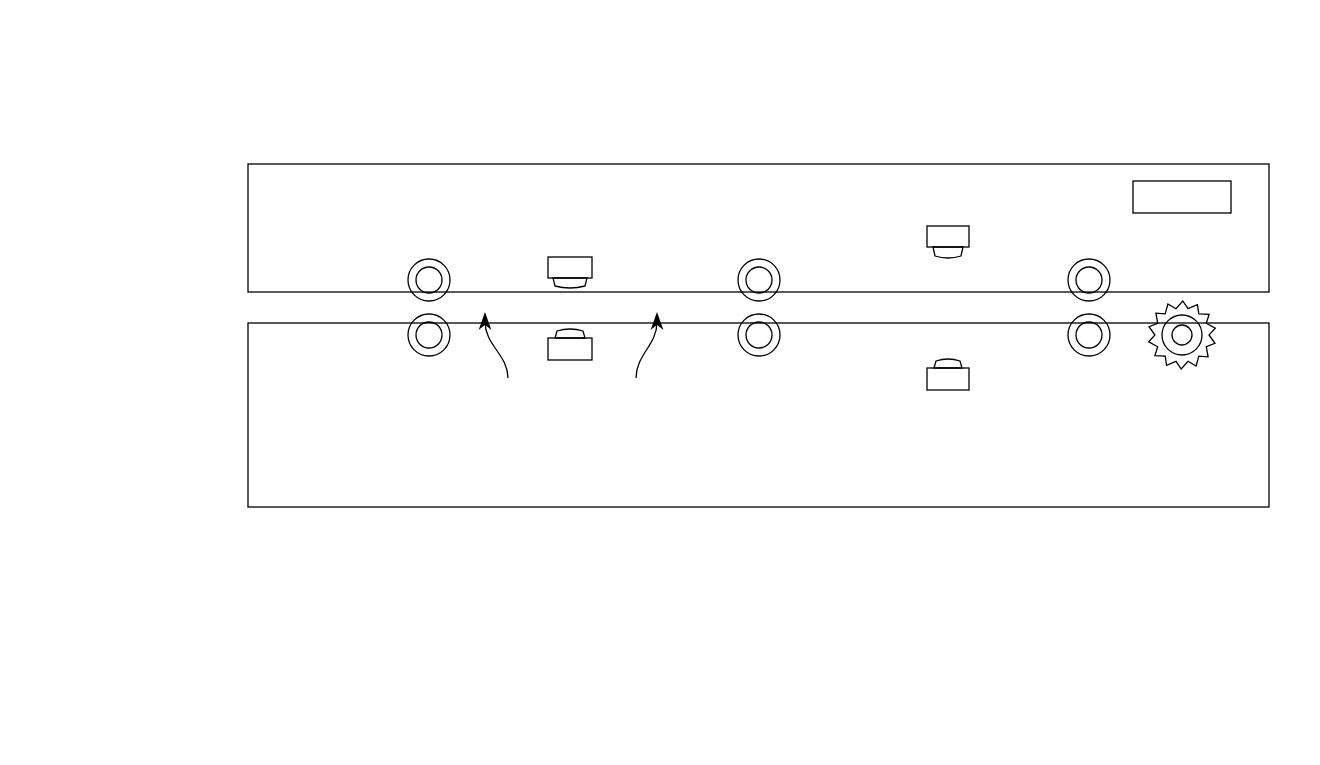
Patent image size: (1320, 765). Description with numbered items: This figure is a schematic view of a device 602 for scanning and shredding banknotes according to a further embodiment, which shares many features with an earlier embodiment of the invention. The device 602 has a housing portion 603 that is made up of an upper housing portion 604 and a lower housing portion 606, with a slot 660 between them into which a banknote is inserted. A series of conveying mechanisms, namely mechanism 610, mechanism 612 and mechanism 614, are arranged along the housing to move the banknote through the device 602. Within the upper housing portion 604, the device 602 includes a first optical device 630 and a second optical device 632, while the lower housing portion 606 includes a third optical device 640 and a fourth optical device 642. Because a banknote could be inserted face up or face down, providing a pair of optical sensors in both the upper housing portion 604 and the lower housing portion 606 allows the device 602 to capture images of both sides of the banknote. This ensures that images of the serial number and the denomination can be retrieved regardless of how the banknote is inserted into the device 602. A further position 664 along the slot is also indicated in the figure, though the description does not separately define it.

The device 602 is at (757, 164).
The housing portion 603 is at (248, 222).
The upper housing portion 604 is at (333, 222).
The lower housing portion 606 is at (333, 412).
The conveying mechanism 610 is at (432, 258).
The conveying mechanism 612 is at (741, 270).
The conveying mechanism 614 is at (1108, 272).
The first optical device 630 is at (556, 257).
The second optical device 632 is at (927, 235).
The third optical device 640 is at (575, 360).
The fourth optical device 642 is at (927, 380).
The slot 660 is at (505, 364).
The second sheet position 664 is at (637, 364).